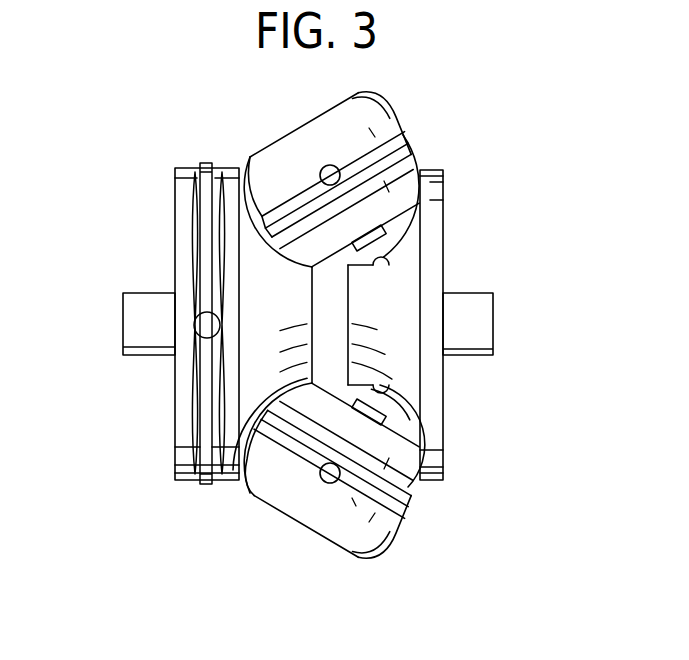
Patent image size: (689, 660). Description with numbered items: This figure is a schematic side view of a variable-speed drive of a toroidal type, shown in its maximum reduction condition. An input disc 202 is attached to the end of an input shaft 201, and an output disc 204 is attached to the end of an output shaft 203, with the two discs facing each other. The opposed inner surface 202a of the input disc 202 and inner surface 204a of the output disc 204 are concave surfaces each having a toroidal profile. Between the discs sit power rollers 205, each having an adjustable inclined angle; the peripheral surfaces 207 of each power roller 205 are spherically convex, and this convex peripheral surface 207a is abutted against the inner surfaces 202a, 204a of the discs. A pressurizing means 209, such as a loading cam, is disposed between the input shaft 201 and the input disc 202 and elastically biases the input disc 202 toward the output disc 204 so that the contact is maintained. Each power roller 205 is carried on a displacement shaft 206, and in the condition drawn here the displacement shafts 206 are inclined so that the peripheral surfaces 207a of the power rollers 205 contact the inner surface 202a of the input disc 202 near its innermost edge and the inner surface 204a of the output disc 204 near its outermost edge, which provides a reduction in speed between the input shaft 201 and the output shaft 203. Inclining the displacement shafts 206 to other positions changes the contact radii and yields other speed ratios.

The input shaft 201 is at (145, 310).
The input disc 202 is at (230, 168).
The inner surface of the input disc 202a is at (270, 470).
The output shaft 203 is at (486, 311).
The output disc 204 is at (437, 190).
The inner surface of the output disc 204a is at (388, 262).
The power roller 205 is at (307, 157).
The displacement shaft 206 is at (386, 235).
The peripheral surface of the power roller 207 is at (393, 199).
The convex peripheral surface 207a is at (414, 160).
The pressurizing means 209 is at (177, 432).